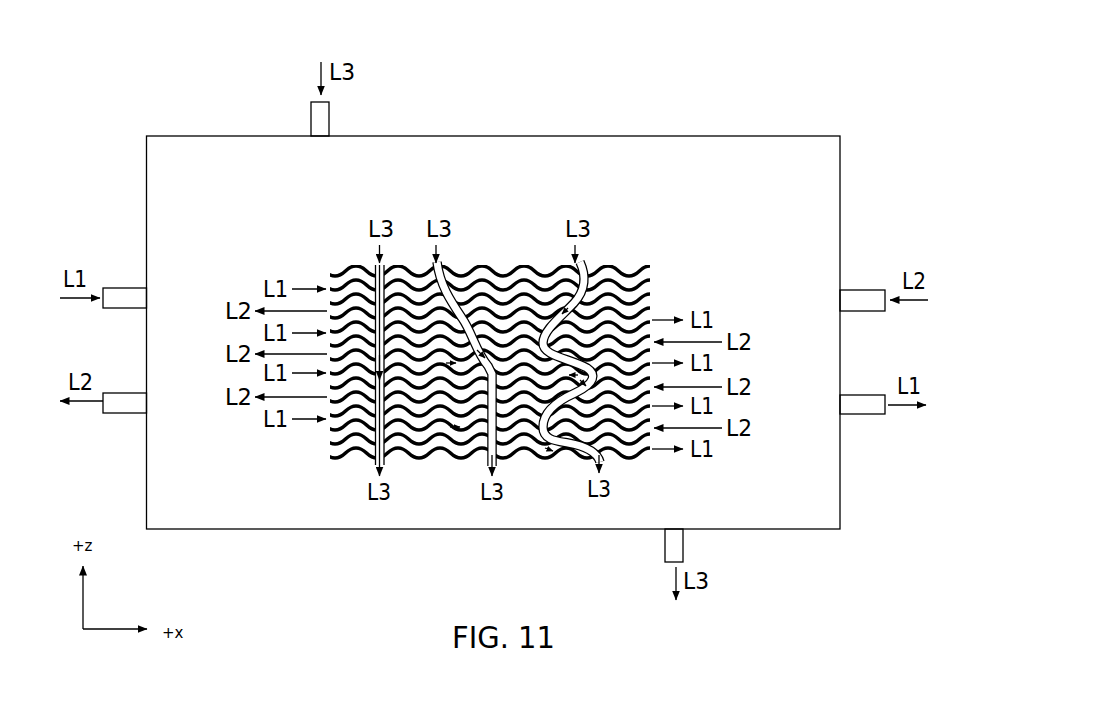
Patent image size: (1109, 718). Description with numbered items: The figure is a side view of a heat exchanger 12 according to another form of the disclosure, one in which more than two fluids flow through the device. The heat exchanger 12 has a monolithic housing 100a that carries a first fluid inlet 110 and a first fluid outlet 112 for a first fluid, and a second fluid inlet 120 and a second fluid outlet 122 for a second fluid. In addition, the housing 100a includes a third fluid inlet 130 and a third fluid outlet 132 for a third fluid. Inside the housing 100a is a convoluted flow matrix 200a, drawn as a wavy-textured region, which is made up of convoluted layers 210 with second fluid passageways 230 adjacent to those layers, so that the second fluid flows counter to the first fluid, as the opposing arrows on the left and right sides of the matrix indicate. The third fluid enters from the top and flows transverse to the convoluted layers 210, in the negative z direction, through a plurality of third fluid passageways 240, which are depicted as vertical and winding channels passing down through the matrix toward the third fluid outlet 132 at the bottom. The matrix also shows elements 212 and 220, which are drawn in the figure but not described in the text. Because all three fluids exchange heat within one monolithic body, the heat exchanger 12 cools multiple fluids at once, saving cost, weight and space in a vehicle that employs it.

The heat exchanger 12 is at (806, 96).
The monolithic housing 100a is at (605, 131).
The first fluid inlet 110 is at (127, 286).
The first fluid outlet 112 is at (863, 414).
The second fluid inlet 120 is at (127, 413).
The second fluid outlet 122 is at (853, 290).
The third fluid inlet 130 is at (311, 113).
The third fluid outlet 132 is at (665, 542).
The convoluted flow matrix 200a is at (689, 250).
The convoluted layers 210 is at (328, 452).
The corrugated layers 212 is at (518, 268).
The straight channel 220 is at (353, 303).
The second fluid passageways 230 is at (340, 290).
The third fluid passageways 240 is at (455, 300).